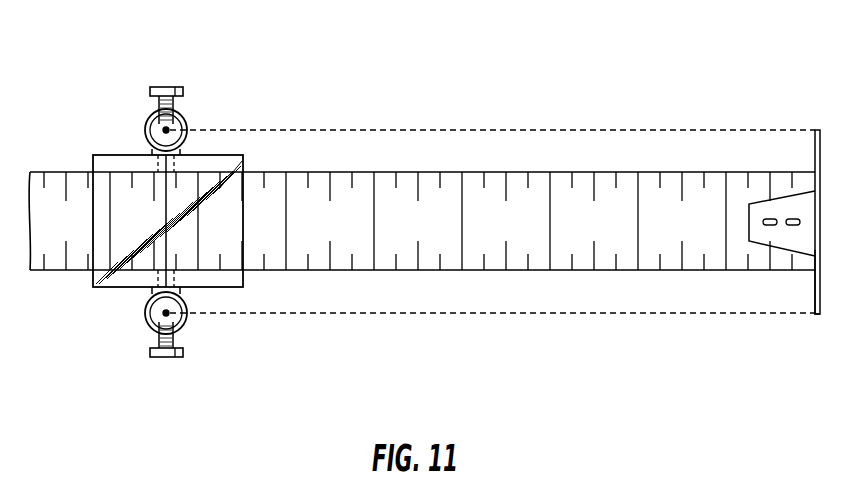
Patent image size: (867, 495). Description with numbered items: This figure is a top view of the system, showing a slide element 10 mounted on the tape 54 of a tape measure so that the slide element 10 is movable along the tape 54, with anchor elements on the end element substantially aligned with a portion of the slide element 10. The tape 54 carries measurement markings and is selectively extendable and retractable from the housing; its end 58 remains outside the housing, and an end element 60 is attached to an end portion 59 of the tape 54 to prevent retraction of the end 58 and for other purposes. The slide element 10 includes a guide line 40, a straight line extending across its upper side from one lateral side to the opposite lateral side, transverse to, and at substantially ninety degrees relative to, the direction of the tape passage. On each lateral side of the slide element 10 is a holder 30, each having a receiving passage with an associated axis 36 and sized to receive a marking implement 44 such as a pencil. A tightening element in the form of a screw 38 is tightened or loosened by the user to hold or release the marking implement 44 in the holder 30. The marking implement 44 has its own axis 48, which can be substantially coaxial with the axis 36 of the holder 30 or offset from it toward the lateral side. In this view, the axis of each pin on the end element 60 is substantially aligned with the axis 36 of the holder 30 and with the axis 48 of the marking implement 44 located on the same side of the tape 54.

The slide element 10 is at (76, 141).
The holder 30 is at (142, 110).
The axis 36 is at (168, 128).
The screw 38 is at (170, 87).
The guide line 40 is at (164, 210).
The marking implement 44 is at (147, 322).
The axis 48 is at (168, 315).
The tape 54 is at (57, 272).
The end 58 is at (814, 171).
The end portion 59 is at (752, 154).
The end element 60 is at (821, 256).